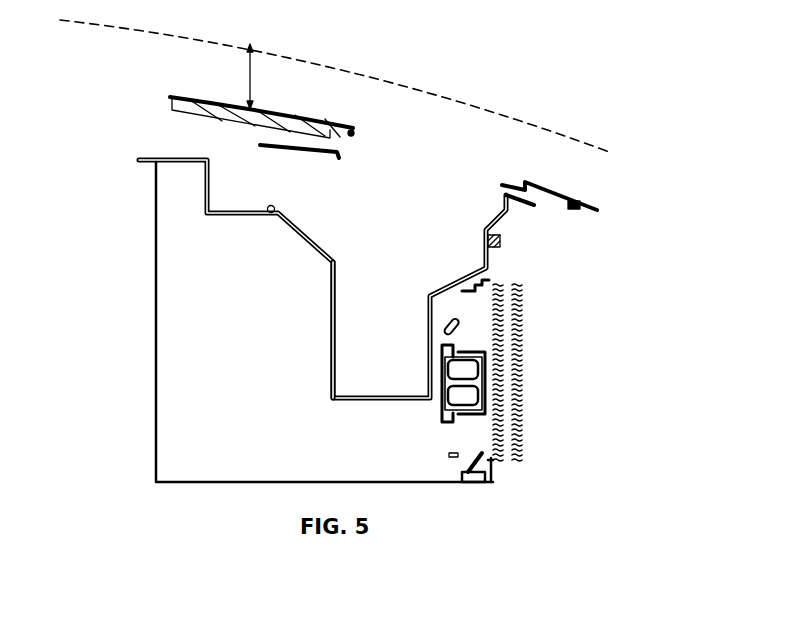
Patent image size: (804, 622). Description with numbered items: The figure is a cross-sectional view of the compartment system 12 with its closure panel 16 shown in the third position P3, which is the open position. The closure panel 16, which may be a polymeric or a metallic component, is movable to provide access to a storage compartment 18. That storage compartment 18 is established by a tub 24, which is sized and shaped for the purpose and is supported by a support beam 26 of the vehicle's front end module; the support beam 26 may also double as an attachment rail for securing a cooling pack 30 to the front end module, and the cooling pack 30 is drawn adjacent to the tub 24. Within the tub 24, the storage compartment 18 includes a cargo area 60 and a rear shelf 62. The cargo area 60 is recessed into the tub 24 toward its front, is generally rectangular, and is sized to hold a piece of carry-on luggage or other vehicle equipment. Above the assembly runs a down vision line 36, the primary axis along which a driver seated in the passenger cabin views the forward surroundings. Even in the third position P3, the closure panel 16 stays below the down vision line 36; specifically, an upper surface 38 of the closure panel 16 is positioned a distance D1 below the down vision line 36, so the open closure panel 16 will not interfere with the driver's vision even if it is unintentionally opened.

The compartment system 12 is at (234, 239).
The closure panel 16 is at (177, 104).
The storage compartment 18 is at (408, 237).
The tub 24 is at (331, 340).
The support beam 26 is at (500, 240).
The cooling pack 30 is at (532, 446).
The down vision line 36 is at (474, 104).
The upper surface 38 is at (322, 122).
The cargo area 60 is at (381, 352).
The rear shelf 62 is at (270, 214).
The distance D1 is at (253, 78).
The third position P3 is at (156, 116).